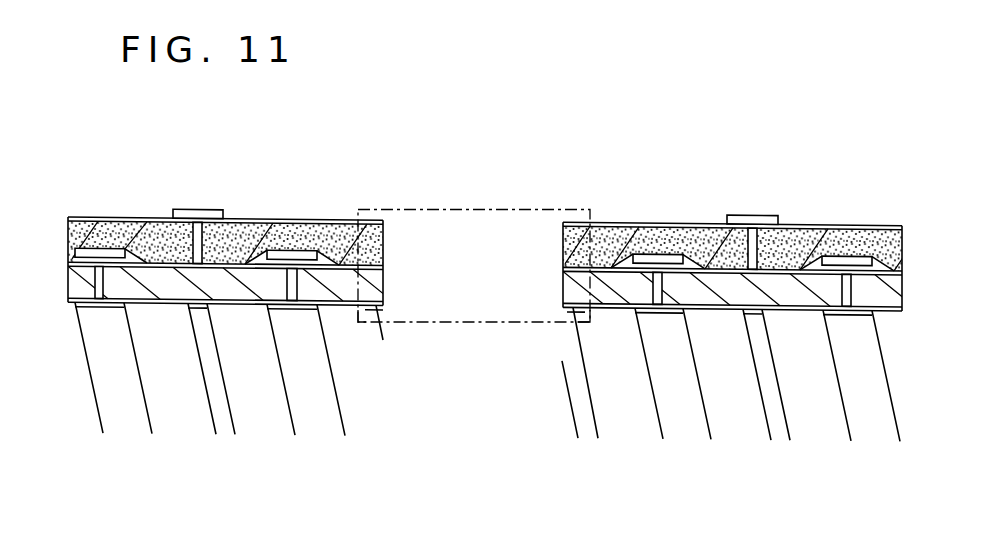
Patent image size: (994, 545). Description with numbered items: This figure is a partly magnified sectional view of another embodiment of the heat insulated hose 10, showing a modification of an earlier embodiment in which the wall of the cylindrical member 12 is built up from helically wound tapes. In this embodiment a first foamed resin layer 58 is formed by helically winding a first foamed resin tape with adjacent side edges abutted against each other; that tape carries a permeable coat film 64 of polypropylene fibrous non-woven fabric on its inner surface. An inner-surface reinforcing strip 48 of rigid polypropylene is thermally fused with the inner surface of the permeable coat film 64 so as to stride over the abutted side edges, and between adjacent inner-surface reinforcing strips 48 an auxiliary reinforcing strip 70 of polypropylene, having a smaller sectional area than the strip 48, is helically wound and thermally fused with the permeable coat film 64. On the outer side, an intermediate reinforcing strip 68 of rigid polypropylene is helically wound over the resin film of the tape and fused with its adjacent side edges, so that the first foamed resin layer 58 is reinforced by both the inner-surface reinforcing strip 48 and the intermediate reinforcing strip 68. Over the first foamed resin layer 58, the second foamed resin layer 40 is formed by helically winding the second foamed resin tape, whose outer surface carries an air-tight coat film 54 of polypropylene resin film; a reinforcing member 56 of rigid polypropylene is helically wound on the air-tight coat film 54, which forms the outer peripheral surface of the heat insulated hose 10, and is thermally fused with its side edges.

The heat insulated hose 10 is at (346, 96).
The cylindrical member 12 is at (801, 179).
The second foamed resin layer 40 is at (60, 231).
The inner-surface reinforcing strip 48 is at (315, 398).
The air-tight coat film 54 is at (278, 217).
The reinforcing member 56 is at (197, 216).
The first foamed resin layer 58 is at (65, 294).
The permeable coat film 64 is at (167, 307).
The intermediate reinforcing strip 68 is at (290, 258).
The auxiliary reinforcing strip 70 is at (220, 407).